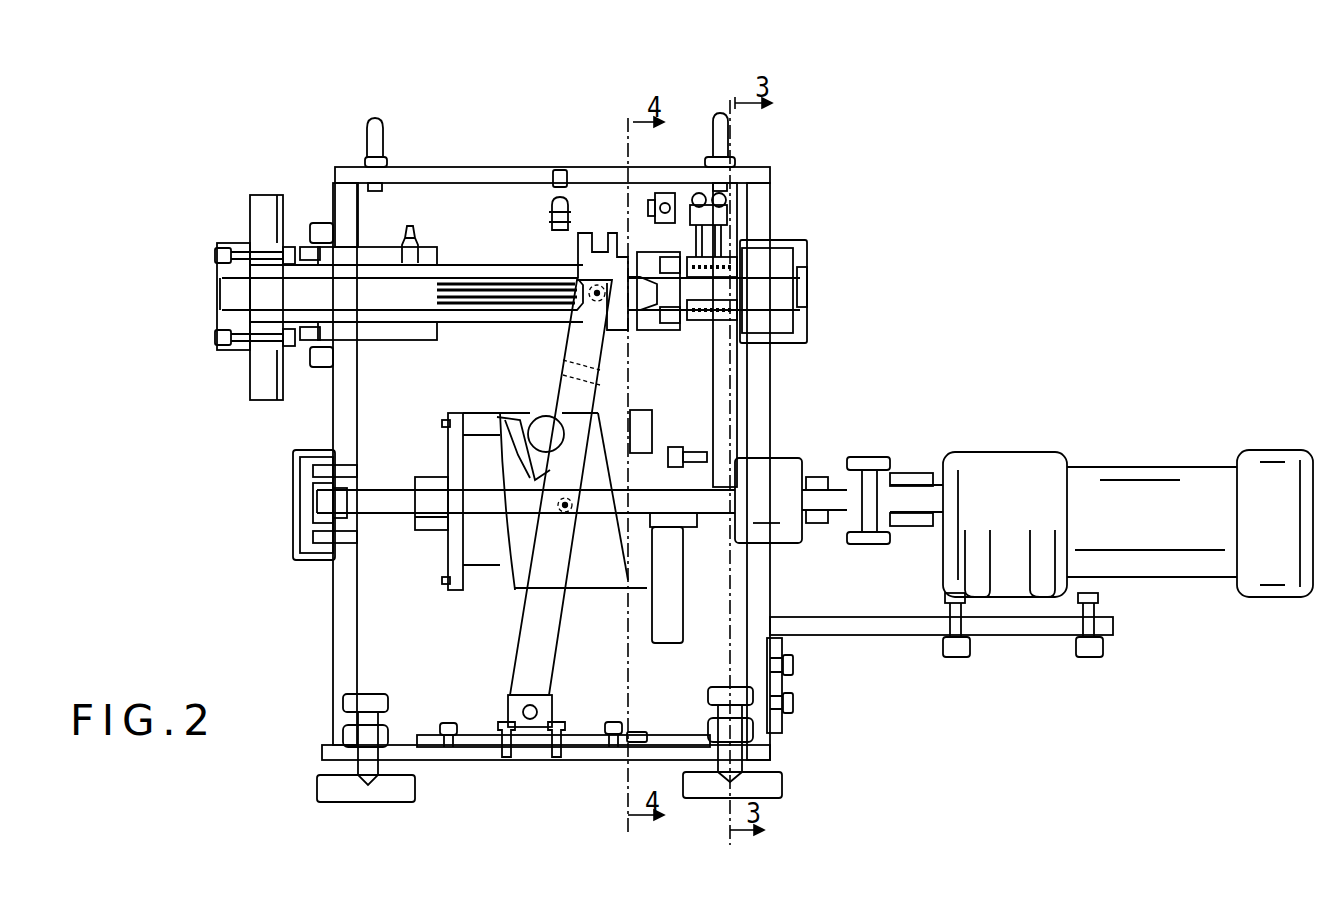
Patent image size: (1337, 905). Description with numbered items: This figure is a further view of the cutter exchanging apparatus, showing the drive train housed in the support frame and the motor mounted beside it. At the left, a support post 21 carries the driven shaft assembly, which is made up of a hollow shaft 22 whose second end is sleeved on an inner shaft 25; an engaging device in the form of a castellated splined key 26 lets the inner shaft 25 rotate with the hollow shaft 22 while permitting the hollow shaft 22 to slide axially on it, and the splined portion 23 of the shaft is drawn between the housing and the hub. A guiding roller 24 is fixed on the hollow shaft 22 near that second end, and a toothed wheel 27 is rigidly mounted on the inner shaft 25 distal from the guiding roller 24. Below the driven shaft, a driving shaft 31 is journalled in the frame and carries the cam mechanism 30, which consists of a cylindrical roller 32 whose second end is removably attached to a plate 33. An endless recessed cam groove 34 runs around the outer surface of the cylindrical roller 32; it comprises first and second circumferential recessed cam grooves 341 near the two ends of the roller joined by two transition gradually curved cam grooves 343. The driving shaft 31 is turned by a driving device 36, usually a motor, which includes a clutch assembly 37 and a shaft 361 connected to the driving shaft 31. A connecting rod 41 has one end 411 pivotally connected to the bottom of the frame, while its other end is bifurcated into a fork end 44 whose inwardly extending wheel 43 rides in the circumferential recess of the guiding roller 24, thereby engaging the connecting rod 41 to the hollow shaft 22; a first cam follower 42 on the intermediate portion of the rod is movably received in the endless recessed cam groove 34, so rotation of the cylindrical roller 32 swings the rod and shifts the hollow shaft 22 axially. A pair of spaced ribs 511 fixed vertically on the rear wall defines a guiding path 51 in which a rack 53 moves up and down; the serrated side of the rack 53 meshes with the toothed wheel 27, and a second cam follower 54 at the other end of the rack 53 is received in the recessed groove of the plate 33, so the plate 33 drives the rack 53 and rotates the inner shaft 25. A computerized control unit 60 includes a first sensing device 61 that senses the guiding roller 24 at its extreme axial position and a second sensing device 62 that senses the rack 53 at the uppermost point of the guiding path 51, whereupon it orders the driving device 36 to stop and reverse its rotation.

The support plate 21 is at (250, 213).
The hollow shaft 22 is at (482, 262).
The splined shaft 23 is at (523, 273).
The guiding roller 24 is at (580, 245).
The inner shaft 25 is at (720, 285).
The castellated splined key 26 is at (720, 297).
The toothed wheel 27 is at (775, 350).
The cam mechanism 30 is at (478, 651).
The driving shaft 31 is at (375, 516).
The cylindrical roller 32 is at (480, 582).
The plate 33 is at (668, 587).
The endless recessed cam groove 34 is at (500, 400).
The circumferential recessed cam groove 341 is at (527, 427).
The transition gradually curved cam groove 343 is at (505, 435).
The driving device 36 is at (1087, 480).
The shaft 361 is at (920, 485).
The clutch assembly 37 is at (882, 478).
The connecting rod 41 is at (530, 660).
The end of connecting rod 411 is at (530, 728).
The first cam follower 42 is at (580, 527).
The wheel 43 is at (590, 302).
The fork end 44 is at (563, 367).
The guiding path 51 is at (772, 228).
The spaced ribs 511 is at (742, 236).
The rack 53 is at (715, 386).
The second cam follower 54 is at (690, 449).
The computerized control unit 60 is at (617, 118).
The first sensing device 61 is at (572, 212).
The second sensing device 62 is at (685, 205).